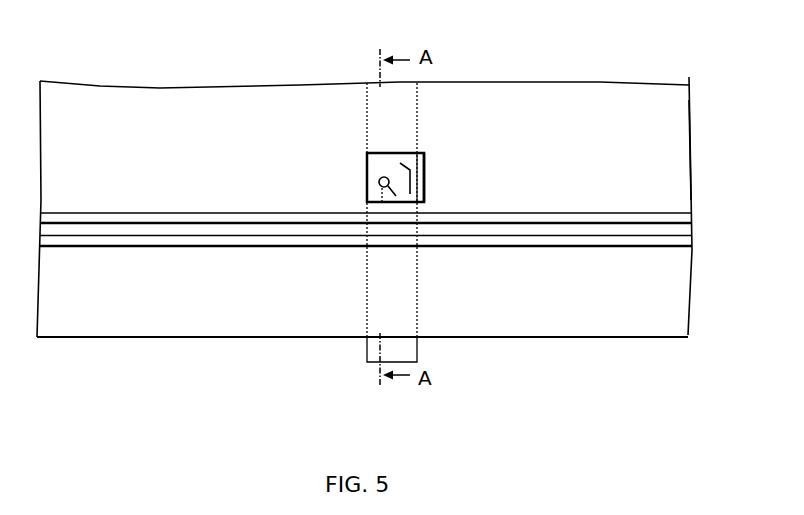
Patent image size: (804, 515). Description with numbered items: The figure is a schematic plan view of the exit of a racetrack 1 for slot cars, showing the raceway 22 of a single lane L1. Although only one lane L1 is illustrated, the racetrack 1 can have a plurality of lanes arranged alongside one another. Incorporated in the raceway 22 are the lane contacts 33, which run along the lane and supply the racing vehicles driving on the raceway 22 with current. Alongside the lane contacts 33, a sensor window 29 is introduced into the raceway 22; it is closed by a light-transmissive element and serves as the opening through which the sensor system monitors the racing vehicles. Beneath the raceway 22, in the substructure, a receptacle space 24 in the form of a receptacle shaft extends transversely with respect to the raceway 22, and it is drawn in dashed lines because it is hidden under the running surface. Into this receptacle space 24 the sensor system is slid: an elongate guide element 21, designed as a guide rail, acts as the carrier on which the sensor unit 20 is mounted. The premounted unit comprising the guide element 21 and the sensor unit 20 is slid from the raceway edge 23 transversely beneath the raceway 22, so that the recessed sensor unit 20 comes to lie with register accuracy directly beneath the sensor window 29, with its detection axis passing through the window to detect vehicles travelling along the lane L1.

The racetrack 1 is at (716, 23).
The sensor unit 20 is at (372, 157).
The guide element 21 is at (367, 350).
The raceway 22 is at (684, 143).
The raceway edge 23 is at (553, 339).
The receptacle space 24 is at (411, 322).
The sensor window 29 is at (425, 181).
The lane contacts 33 is at (693, 212).
The lane L1 is at (663, 324).